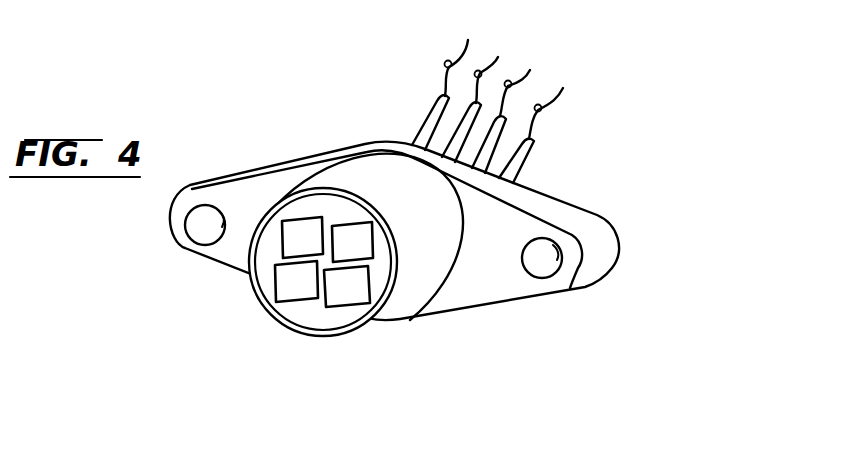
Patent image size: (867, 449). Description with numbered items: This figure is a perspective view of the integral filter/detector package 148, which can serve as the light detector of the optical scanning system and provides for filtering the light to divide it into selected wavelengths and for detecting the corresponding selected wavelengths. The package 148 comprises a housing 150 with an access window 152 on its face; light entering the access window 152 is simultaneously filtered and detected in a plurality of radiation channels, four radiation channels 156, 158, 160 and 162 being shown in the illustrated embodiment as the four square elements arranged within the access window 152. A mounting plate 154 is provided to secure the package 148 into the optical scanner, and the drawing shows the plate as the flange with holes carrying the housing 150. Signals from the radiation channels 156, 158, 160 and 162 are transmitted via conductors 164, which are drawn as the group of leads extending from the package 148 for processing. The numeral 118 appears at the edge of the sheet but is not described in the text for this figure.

The adjacent figure element 118 is at (30, 12).
The detector assembly 148 is at (572, 150).
The mounting flange 150 is at (413, 300).
The housing can 152 is at (328, 318).
The flange top surface 154 is at (264, 193).
The detector element 156 is at (390, 287).
The detector element 158 is at (393, 247).
The detector element 160 is at (255, 297).
The detector element 162 is at (269, 247).
The lead wires 164 is at (548, 70).